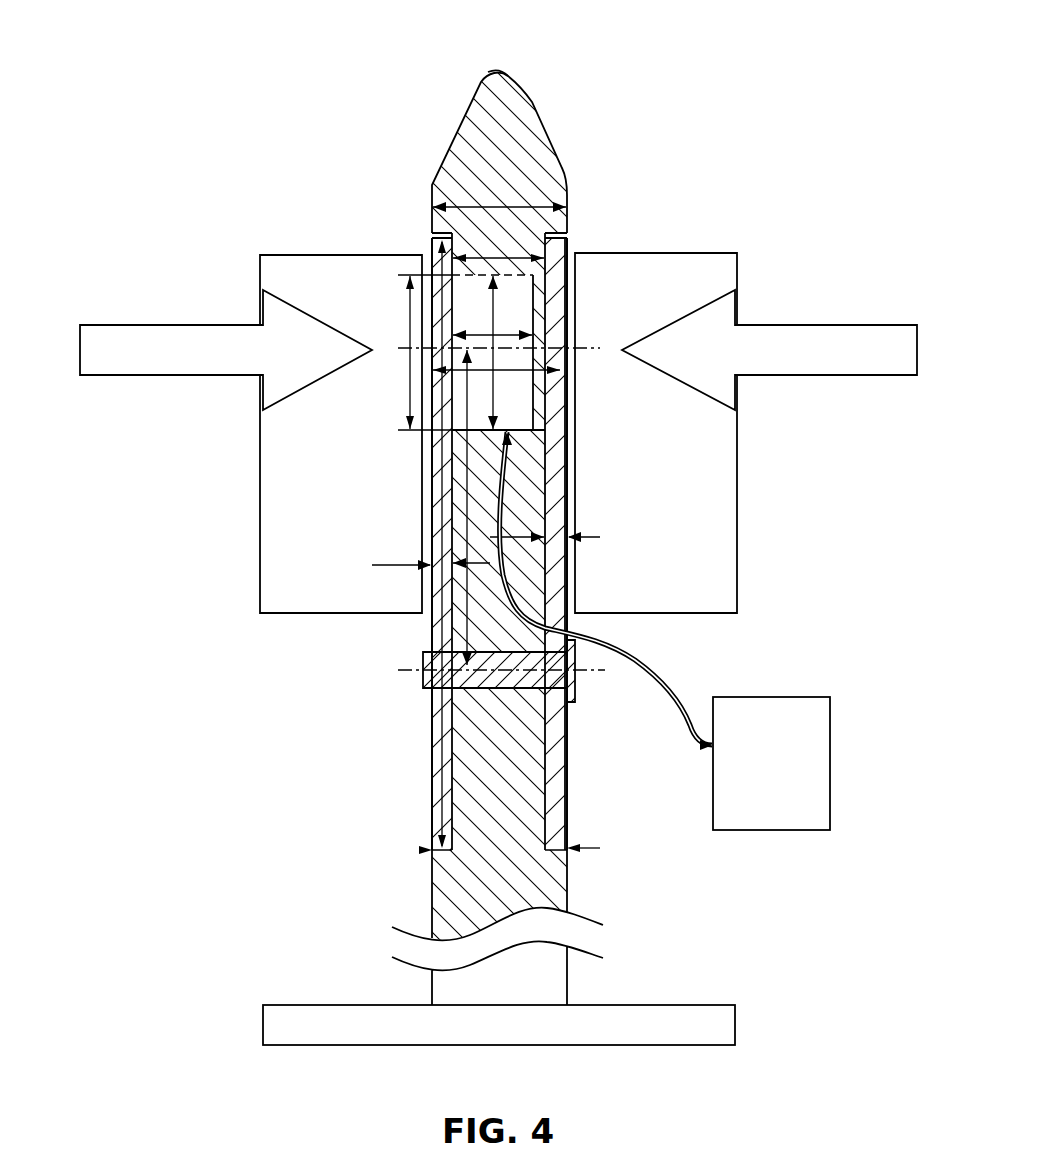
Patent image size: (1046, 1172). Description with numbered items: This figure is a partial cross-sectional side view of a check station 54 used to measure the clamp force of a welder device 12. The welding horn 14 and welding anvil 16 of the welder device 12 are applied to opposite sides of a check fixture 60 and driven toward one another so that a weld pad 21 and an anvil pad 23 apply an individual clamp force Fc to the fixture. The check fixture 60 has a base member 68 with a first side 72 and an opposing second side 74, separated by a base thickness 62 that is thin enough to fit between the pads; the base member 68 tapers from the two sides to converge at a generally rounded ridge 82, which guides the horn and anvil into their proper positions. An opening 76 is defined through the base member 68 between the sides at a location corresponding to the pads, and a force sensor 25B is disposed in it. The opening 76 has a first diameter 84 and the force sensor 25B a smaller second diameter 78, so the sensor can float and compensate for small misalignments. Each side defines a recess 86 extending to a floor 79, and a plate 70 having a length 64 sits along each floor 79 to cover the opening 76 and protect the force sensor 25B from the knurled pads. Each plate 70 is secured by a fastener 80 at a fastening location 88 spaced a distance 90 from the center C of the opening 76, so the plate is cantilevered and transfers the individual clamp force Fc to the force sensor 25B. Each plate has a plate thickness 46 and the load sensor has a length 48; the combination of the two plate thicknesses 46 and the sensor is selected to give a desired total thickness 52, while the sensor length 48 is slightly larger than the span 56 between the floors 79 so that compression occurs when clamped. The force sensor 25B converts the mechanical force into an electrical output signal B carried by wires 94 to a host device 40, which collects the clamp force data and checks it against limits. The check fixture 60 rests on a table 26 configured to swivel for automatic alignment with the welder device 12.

The welder device 12 is at (710, 205).
The welding horn 14 is at (662, 507).
The welding anvil 16 is at (282, 473).
The weld pad 21 is at (566, 320).
The anvil pad 23 is at (437, 302).
The force sensor 25B is at (513, 357).
The table 26 is at (481, 1040).
The host device 40 is at (754, 777).
The plate thickness 46 is at (372, 565).
The length of the load sensor 48 is at (500, 333).
The desired total thickness 52 is at (502, 380).
The check station 54 is at (570, 108).
The span 56 is at (473, 245).
The check fixture 60 is at (440, 55).
The base thickness 62 is at (507, 207).
The length 64 is at (443, 442).
The base member 68 is at (545, 760).
The plate 70 is at (430, 626).
The first side 72 is at (567, 885).
The second side 74 is at (432, 887).
The opening 76 is at (545, 283).
The second diameter 78 is at (493, 408).
The floor 79 is at (437, 800).
The fastener 80 is at (577, 685).
The ridge 82 is at (497, 75).
The first diameter 84 is at (447, 335).
The recess 86 is at (569, 848).
The fastening location 88 is at (398, 672).
The distance 90 is at (462, 492).
The wires 94 is at (672, 672).
The electrical output signal B is at (678, 702).
The center of the opening C is at (398, 350).
The individual clamp force Fc is at (172, 323).